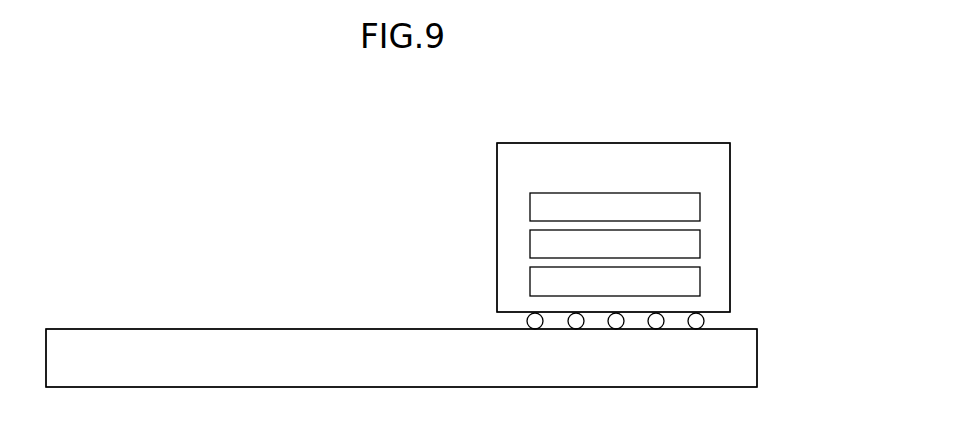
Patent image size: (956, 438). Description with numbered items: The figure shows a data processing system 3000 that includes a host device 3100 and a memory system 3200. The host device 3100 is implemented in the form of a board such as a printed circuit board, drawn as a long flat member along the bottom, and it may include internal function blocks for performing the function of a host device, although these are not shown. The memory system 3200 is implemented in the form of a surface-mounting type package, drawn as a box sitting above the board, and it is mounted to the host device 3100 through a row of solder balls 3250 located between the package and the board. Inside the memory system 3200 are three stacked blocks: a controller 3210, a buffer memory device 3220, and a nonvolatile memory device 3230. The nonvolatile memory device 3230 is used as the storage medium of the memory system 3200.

The data processing system 3000 is at (110, 85).
The host device 3100 is at (401, 358).
The memory system 3200 is at (613, 227).
The controller 3210 is at (615, 208).
The buffer memory device 3220 is at (615, 245).
The nonvolatile memory device 3230 is at (615, 282).
The solder balls 3250 is at (715, 319).